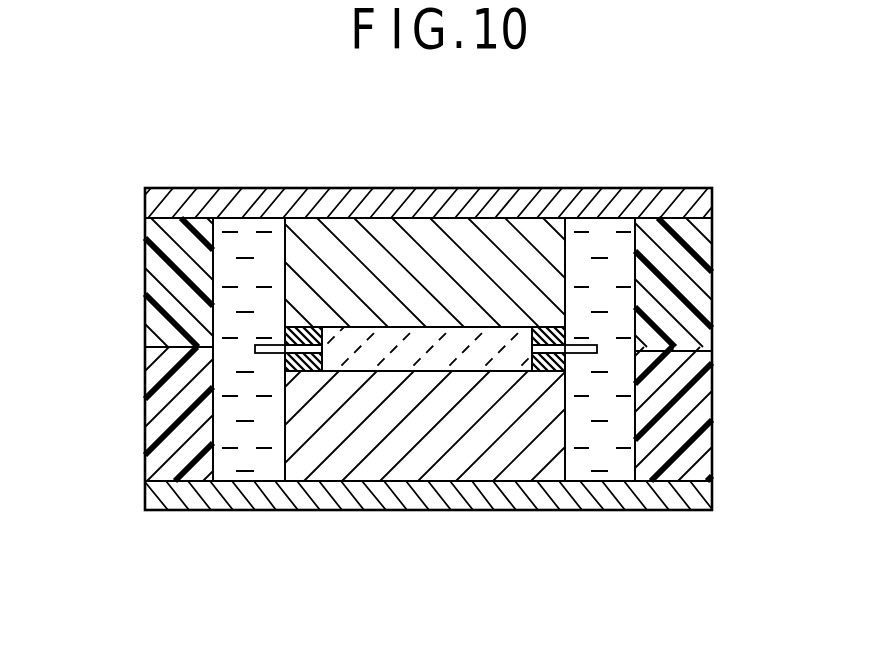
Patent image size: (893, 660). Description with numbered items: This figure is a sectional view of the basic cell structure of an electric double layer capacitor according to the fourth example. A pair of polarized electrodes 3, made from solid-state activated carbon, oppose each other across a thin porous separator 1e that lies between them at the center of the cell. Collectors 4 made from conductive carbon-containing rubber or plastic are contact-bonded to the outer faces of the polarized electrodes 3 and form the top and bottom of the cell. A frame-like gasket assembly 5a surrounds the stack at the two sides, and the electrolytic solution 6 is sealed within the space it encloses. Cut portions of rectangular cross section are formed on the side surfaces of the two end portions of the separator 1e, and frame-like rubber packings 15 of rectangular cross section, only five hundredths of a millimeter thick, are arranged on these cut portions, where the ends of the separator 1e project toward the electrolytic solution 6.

The separator 1e is at (424, 370).
The polarized electrode 3 is at (393, 235).
The collector 4 is at (655, 200).
The gasket assembly 5a is at (697, 282).
The electrolytic solution 6 is at (242, 232).
The rubber packing 15 is at (565, 368).